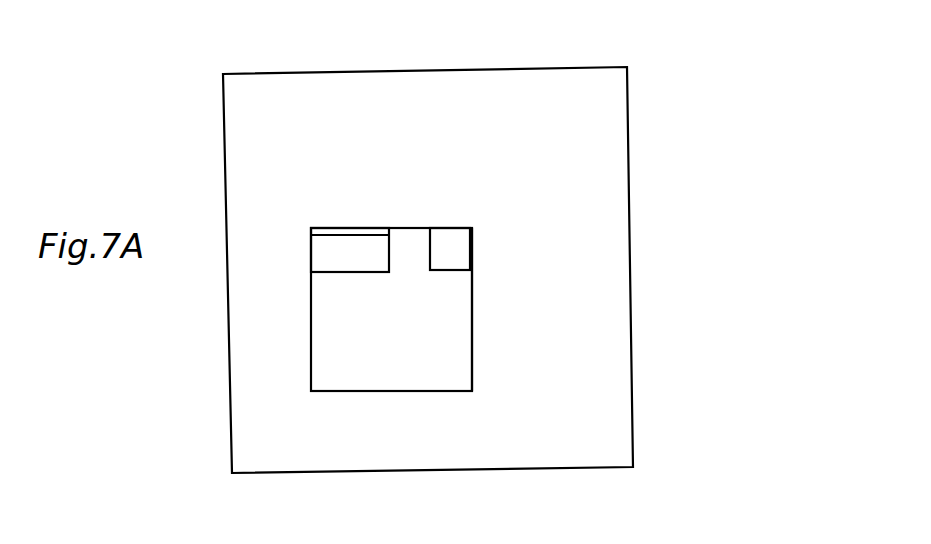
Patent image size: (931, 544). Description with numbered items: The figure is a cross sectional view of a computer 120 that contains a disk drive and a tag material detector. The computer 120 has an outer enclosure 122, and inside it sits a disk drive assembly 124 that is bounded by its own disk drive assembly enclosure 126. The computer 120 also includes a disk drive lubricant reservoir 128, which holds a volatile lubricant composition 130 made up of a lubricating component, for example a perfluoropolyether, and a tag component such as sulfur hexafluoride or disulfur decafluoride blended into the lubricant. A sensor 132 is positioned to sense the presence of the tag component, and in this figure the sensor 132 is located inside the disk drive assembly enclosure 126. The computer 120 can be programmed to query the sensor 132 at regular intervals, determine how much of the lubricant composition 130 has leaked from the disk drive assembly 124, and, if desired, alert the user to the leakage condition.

The computer 120 is at (484, 262).
The enclosure 122 is at (628, 143).
The disk drive assembly 124 is at (388, 372).
The disk drive assembly enclosure 126 is at (472, 365).
The disk drive lubricant reservoir 128 is at (393, 252).
The volatile lubricant composition 130 is at (328, 258).
The sensor 132 is at (460, 254).